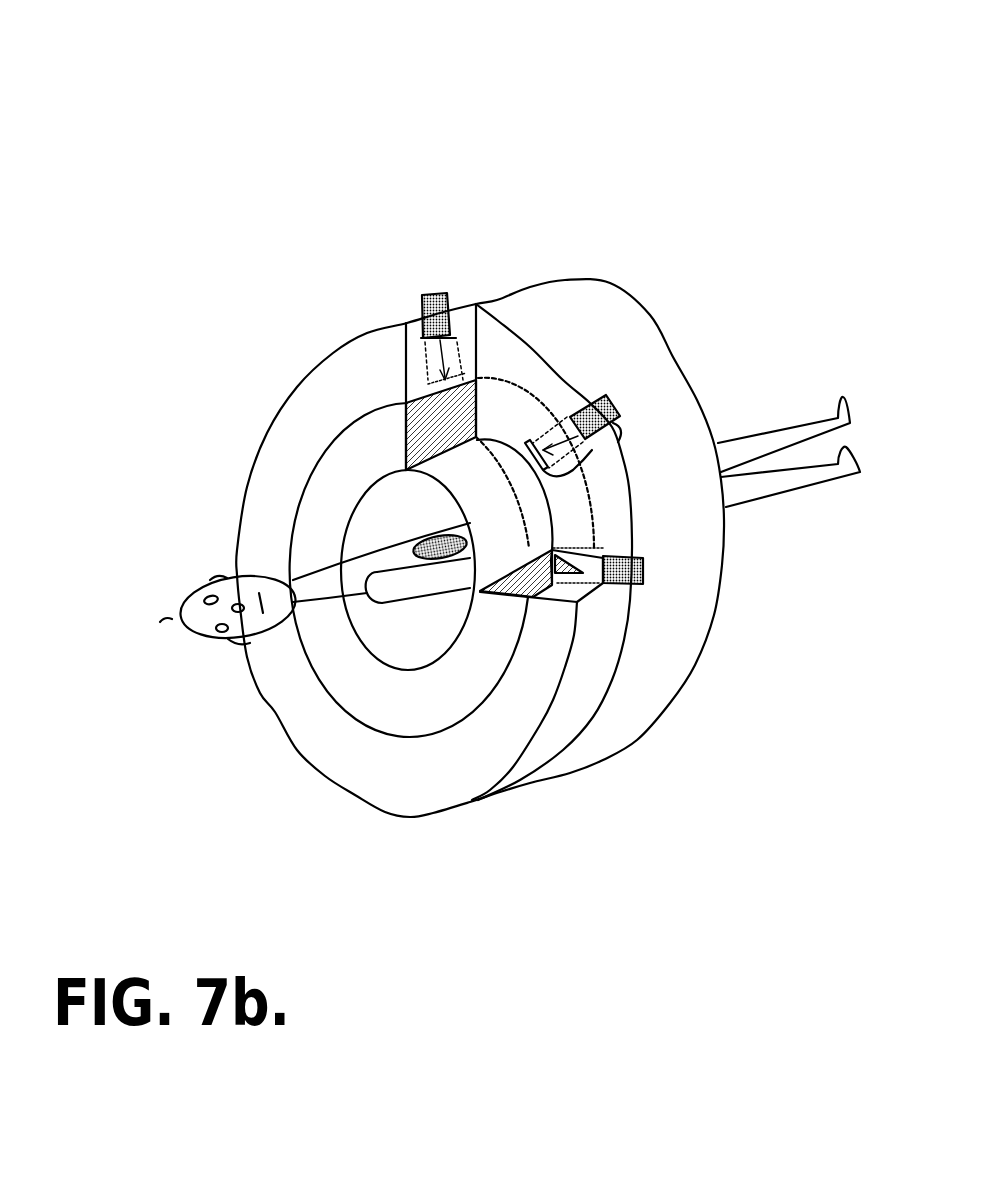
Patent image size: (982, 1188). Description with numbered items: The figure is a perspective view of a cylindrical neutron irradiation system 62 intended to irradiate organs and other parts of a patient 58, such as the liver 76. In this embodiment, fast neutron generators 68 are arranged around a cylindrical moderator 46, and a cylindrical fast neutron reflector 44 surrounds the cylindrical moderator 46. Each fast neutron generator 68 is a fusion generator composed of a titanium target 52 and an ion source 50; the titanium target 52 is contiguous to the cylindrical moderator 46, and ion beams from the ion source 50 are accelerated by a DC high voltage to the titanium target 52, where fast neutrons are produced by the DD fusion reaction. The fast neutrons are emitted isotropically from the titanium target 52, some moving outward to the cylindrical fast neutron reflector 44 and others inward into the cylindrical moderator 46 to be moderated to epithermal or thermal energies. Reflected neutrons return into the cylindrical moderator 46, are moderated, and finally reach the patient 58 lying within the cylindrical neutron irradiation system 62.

The cylindrical neutron irradiation system 62 is at (467, 138).
The cylindrical fast neutron reflector 44 is at (507, 723).
The cylindrical moderator 46 is at (405, 703).
The ion source 50 is at (435, 295).
The titanium target 52 is at (527, 440).
The fast neutron generator 68 is at (590, 452).
The liver 76 is at (440, 550).
The patient 58 is at (183, 622).